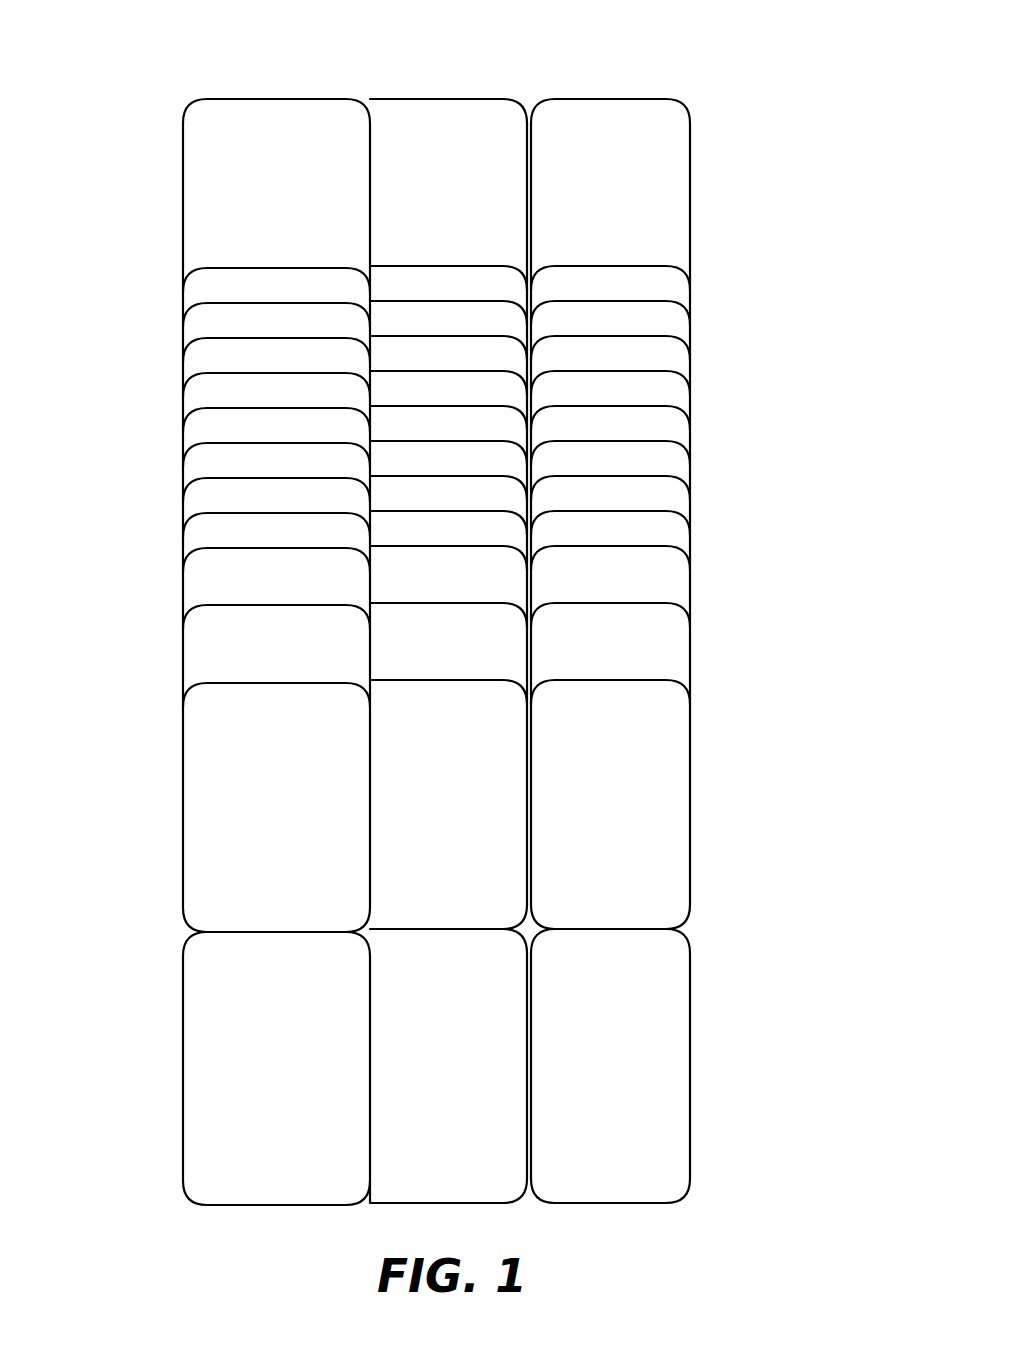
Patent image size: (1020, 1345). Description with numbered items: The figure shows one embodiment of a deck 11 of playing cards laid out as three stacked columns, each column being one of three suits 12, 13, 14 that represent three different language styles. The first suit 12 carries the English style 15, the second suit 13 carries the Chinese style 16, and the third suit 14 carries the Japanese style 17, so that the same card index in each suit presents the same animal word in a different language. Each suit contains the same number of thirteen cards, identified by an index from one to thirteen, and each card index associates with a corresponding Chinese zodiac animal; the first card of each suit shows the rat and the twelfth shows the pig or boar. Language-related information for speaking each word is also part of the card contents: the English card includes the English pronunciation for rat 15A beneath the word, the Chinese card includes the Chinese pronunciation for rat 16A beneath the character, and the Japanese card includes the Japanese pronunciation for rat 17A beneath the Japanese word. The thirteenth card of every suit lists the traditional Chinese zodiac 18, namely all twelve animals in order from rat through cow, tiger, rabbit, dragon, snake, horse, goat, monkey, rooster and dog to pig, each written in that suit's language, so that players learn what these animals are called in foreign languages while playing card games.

The deck of playing cards 11 is at (597, 66).
The first suit 12 is at (290, 104).
The second suit 13 is at (465, 104).
The third suit 14 is at (640, 104).
The English style 15 is at (215, 172).
The English pronunciation for rat 15A is at (192, 225).
The Chinese style 16 is at (462, 188).
The Chinese pronunciation for rat 16A is at (473, 236).
The Japanese style 17 is at (670, 186).
The Japanese pronunciation for rat 17A is at (650, 234).
The traditional Chinese zodiac 18 is at (236, 963).